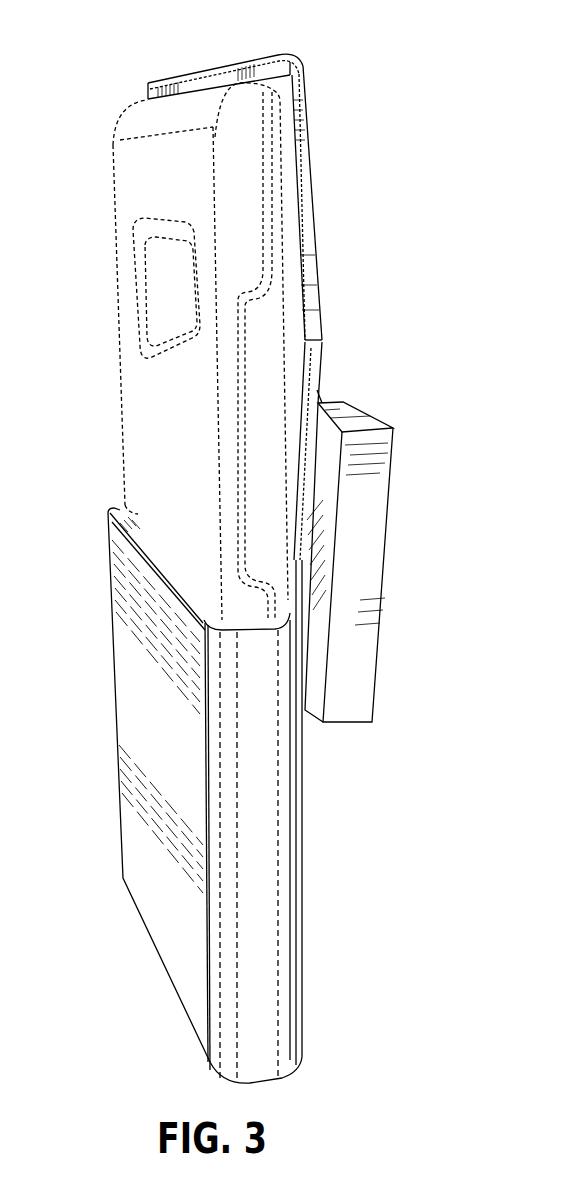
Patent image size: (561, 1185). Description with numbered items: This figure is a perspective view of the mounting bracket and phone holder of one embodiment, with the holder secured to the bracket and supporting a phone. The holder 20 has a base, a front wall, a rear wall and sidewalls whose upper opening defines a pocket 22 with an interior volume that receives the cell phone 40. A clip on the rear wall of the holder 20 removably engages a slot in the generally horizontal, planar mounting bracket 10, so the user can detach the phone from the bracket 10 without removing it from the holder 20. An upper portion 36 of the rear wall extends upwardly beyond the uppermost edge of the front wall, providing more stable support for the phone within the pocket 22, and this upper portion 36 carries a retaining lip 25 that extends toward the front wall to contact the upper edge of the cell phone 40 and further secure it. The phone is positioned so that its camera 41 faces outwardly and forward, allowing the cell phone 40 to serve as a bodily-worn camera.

The mounting bracket 10 is at (387, 531).
The holder 20 is at (130, 715).
The pocket 22 is at (117, 511).
The retaining lip 25 is at (190, 82).
The upper portion 36 is at (310, 114).
The cell phone 40 is at (130, 205).
The camera 41 is at (147, 287).